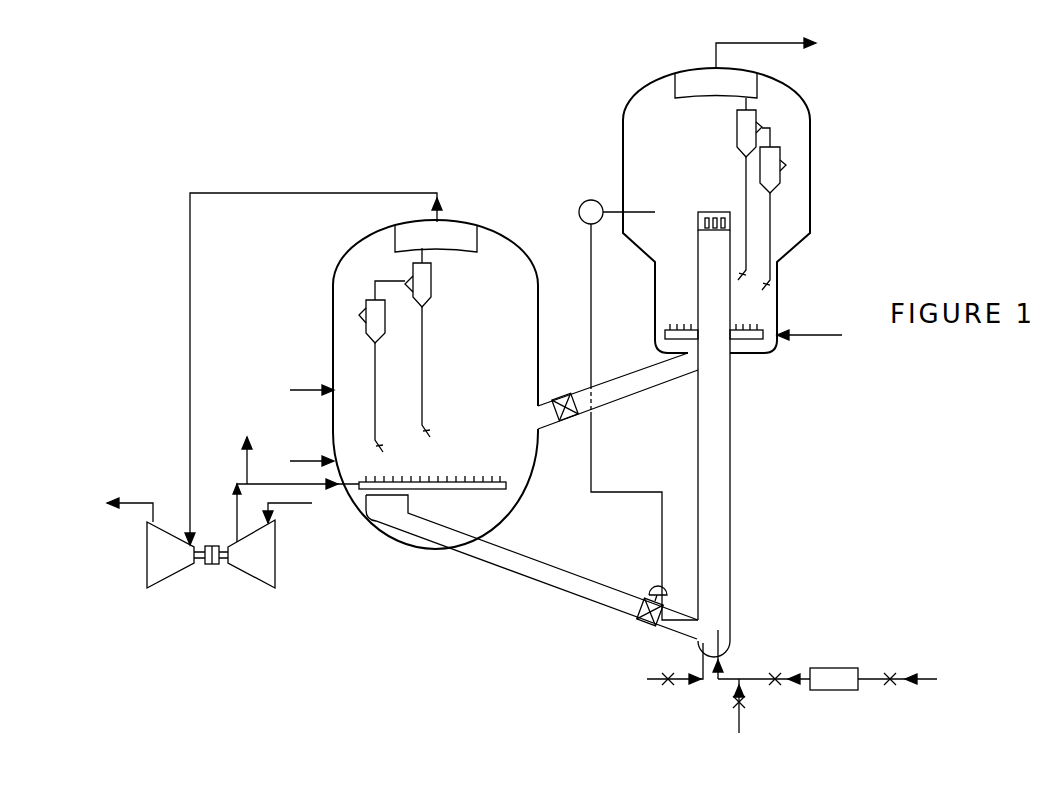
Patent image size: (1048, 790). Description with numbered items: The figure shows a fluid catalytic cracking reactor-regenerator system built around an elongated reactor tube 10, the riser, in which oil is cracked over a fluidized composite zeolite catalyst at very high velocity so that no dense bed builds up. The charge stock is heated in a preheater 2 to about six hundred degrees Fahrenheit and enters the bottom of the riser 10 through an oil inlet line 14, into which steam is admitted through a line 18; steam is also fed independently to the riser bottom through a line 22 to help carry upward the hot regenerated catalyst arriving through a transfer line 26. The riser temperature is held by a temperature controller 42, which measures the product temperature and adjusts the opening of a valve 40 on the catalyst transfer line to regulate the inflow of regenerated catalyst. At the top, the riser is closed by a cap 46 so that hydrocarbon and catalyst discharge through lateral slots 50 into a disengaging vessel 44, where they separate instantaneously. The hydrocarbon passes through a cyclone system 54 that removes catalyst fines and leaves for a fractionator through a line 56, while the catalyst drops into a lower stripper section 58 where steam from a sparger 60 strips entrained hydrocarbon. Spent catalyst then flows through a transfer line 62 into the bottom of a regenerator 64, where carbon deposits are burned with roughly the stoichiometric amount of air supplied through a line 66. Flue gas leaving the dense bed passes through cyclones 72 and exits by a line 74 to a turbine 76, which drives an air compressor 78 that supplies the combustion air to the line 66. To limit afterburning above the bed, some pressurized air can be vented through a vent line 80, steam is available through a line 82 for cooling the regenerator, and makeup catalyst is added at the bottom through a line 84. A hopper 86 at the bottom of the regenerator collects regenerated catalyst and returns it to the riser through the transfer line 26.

The preheater 2 is at (836, 668).
The reactor tube 10 is at (731, 506).
The oil inlet line 14 is at (760, 681).
The steam line 18 is at (738, 718).
The steam line 22 is at (681, 683).
The transfer line 26 is at (540, 561).
The valve 40 is at (652, 588).
The temperature controller 42 is at (580, 210).
The disengaging vessel 44 is at (811, 154).
The riser cap 46 is at (711, 210).
The lateral slots 50 is at (698, 228).
The cyclone system 54 is at (735, 138).
The line 56 is at (778, 45).
The stripper section 58 is at (778, 293).
The sparger 60 is at (689, 326).
The transfer line 62 is at (627, 398).
The regenerator 64 is at (539, 262).
The air line 66 is at (290, 484).
The cyclones 72 is at (436, 304).
The flue gas line 74 is at (355, 193).
The turbine 76 is at (167, 580).
The air compressor 78 is at (257, 585).
The vent line 80 is at (246, 465).
The steam line 82 is at (300, 390).
The makeup catalyst line 84 is at (306, 461).
The hopper 86 is at (410, 499).